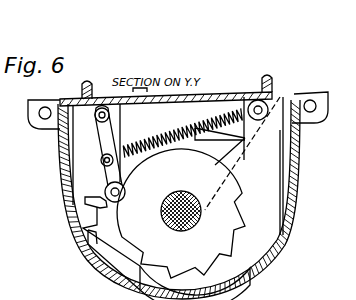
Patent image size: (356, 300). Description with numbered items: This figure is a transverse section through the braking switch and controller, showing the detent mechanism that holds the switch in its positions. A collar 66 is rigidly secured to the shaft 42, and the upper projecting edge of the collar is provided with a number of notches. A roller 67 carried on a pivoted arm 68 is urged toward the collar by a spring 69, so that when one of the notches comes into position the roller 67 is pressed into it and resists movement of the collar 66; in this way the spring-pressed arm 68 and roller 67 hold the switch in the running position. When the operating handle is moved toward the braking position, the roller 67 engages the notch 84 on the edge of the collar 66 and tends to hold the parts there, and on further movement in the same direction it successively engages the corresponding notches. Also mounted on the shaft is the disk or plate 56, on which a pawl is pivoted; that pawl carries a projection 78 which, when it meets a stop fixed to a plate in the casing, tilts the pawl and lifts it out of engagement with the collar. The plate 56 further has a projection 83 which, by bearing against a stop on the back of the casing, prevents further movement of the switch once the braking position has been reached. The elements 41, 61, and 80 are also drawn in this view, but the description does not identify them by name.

The casing 41 is at (296, 222).
The shaft 42 is at (199, 213).
The disk or plate 56 is at (224, 168).
The side posts 61 is at (178, 166).
The collar 66 is at (181, 203).
The roller 67 is at (112, 206).
The pivoted arm 68 is at (100, 150).
The spring 69 is at (147, 140).
The projection on the pawl 78 is at (85, 200).
The pivot 80 is at (126, 193).
The projection on the plate 83 is at (90, 233).
The notch on the edge of the collar 84 is at (155, 270).